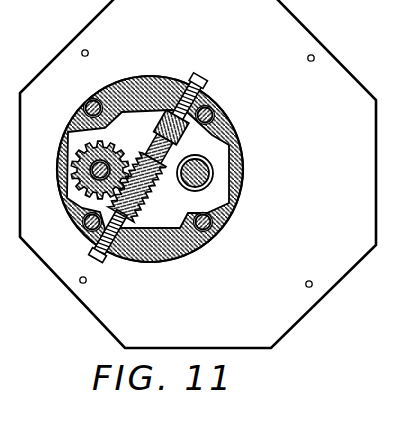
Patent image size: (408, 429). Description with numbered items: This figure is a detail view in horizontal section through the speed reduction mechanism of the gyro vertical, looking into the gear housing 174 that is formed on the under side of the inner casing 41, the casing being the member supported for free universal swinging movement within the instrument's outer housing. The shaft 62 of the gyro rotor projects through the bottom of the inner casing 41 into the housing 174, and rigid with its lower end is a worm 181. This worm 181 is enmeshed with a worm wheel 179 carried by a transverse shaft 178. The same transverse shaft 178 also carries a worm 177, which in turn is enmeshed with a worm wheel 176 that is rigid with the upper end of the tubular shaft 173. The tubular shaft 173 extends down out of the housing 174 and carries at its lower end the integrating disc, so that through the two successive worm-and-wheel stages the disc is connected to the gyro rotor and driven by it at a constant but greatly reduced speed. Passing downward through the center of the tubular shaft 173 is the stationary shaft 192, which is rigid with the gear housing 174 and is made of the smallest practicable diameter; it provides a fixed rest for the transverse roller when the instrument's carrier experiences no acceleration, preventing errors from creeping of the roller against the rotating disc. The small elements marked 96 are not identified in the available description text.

The inner casing 41 is at (195, 26).
The mounting holes 96 is at (88, 53).
The tubular shaft 173 is at (63, 130).
The housing 174 is at (238, 202).
The shaft of the gyro rotor 62 is at (213, 174).
The stationary shaft 192 is at (78, 143).
The worm wheel 176 is at (78, 178).
The worm 177 is at (147, 201).
The transverse shaft 178 is at (82, 216).
The worm wheel 179 is at (192, 137).
The worm 181 is at (205, 153).